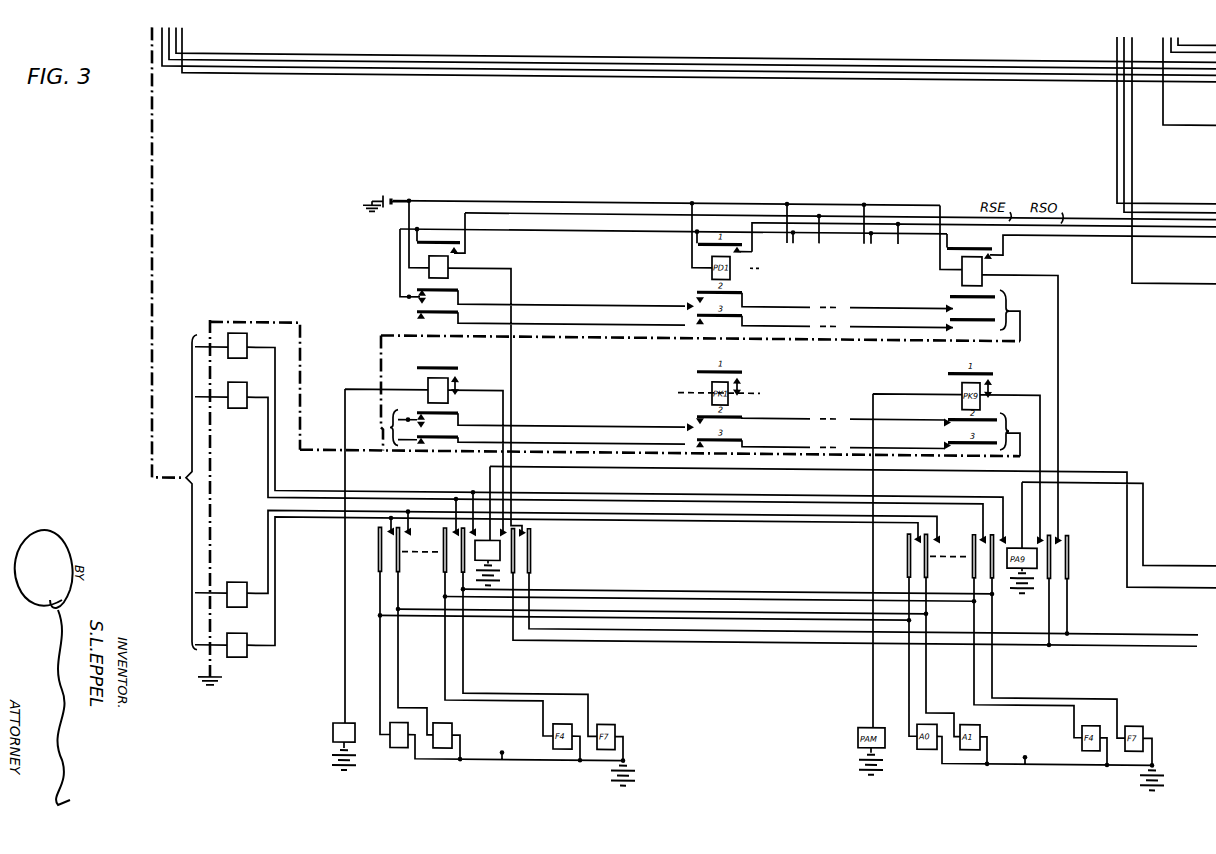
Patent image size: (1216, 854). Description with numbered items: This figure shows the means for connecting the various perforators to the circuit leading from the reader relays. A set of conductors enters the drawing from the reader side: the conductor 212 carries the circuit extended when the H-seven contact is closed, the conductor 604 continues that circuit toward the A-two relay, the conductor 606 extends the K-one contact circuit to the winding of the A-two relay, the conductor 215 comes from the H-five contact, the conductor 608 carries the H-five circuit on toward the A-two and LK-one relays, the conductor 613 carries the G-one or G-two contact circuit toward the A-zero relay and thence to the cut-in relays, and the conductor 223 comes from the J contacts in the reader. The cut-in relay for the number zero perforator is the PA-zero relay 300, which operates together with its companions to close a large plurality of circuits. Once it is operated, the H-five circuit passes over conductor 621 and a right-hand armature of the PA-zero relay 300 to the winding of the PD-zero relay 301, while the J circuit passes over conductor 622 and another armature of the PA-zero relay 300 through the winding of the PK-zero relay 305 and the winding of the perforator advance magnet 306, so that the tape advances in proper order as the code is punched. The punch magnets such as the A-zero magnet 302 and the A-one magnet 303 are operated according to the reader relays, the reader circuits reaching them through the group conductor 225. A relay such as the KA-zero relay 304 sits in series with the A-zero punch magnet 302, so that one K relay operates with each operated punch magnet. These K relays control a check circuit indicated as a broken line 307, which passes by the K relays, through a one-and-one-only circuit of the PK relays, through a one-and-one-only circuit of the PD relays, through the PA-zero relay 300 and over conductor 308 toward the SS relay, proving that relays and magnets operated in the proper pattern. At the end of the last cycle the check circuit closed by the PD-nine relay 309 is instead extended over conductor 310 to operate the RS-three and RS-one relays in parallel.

The group conductor 225 is at (156, 191).
The check circuit 307 is at (265, 318).
The KA0 relay 304 is at (240, 656).
The PAM magnet 306 is at (333, 737).
The A0 magnet 302 is at (399, 747).
The A1 magnet 303 is at (452, 722).
The PA0 relay 300 is at (532, 554).
The PD0 relay 301 is at (450, 260).
The PK0 relay 305 is at (450, 400).
The conductor 308 is at (592, 190).
The PD9 relay 309 is at (960, 274).
The conductor 310 is at (1075, 228).
The conductor 608 is at (600, 65).
The conductor 613 is at (676, 72).
The conductor 606 is at (1182, 44).
The conductor 604 is at (1162, 108).
The conductor 223 is at (1130, 179).
The conductor 215 is at (1186, 189).
The conductor 212 is at (1186, 265).
The conductor 621 is at (1169, 625).
The conductor 622 is at (1155, 637).